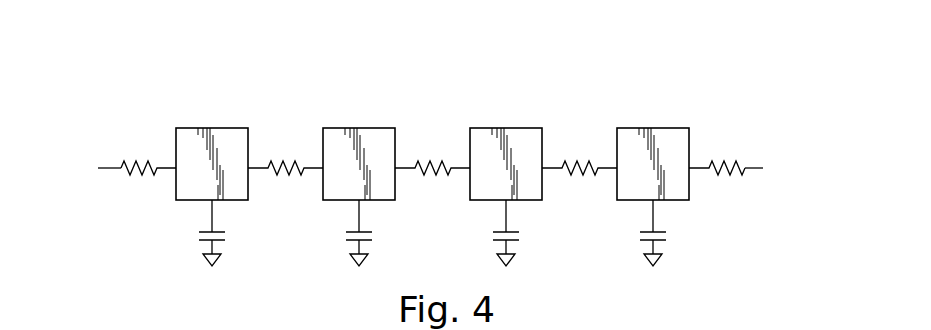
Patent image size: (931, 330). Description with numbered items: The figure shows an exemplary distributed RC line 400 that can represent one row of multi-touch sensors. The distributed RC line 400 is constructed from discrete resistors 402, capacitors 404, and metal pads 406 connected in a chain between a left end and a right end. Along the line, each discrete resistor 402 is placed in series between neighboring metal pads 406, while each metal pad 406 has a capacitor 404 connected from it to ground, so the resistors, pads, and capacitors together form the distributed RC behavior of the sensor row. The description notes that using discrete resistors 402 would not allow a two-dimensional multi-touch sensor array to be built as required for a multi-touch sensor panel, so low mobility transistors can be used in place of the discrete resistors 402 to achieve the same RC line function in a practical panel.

The distributed RC line 400 is at (316, 93).
The discrete resistor 402 is at (148, 168).
The capacitor 404 is at (204, 233).
The metal pad 406 is at (197, 128).